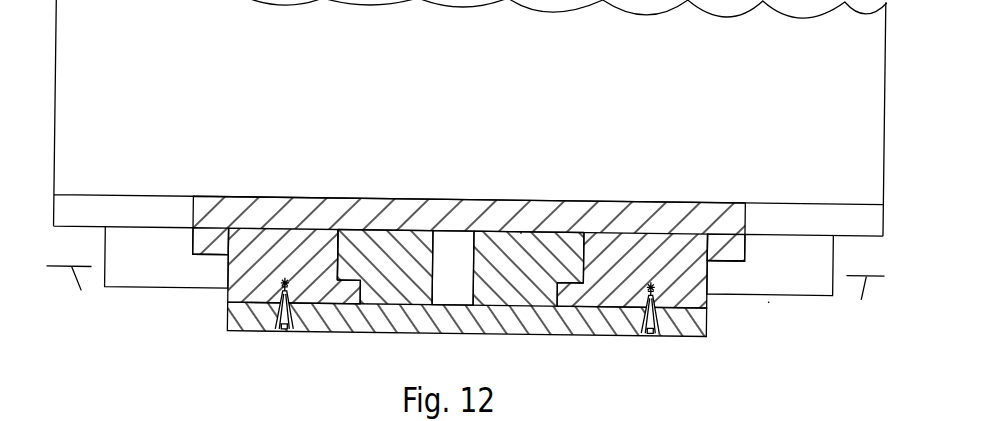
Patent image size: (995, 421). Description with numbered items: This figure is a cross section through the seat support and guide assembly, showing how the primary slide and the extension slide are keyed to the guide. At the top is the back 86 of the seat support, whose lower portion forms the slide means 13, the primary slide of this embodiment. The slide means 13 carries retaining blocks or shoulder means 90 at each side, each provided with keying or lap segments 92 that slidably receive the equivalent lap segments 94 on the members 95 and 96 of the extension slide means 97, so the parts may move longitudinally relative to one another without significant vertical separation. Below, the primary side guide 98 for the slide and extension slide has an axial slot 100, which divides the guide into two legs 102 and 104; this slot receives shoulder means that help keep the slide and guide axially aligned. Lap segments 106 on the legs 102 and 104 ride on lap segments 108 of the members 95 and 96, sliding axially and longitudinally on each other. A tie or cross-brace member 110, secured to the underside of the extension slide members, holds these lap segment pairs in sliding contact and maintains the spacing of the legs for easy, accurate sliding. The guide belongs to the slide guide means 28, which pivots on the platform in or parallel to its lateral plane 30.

The slide means 13 is at (279, 203).
The slide guide means 28 is at (772, 300).
The lateral plane 30 is at (465, 300).
The back 86 is at (361, 80).
The retaining blocks or shoulder means 90 is at (168, 274).
The lap segments 92 is at (206, 255).
The lap segments 94 is at (216, 258).
The member 95 is at (245, 250).
The member 96 is at (627, 251).
The extension slide means 97 is at (336, 227).
The primary side guide 98 is at (521, 227).
The axial slot 100 is at (457, 252).
The leg 102 is at (402, 246).
The leg 104 is at (537, 261).
The lap segments 106 is at (358, 283).
The lap segments 108 is at (358, 282).
The tie or cross-brace member 110 is at (532, 335).